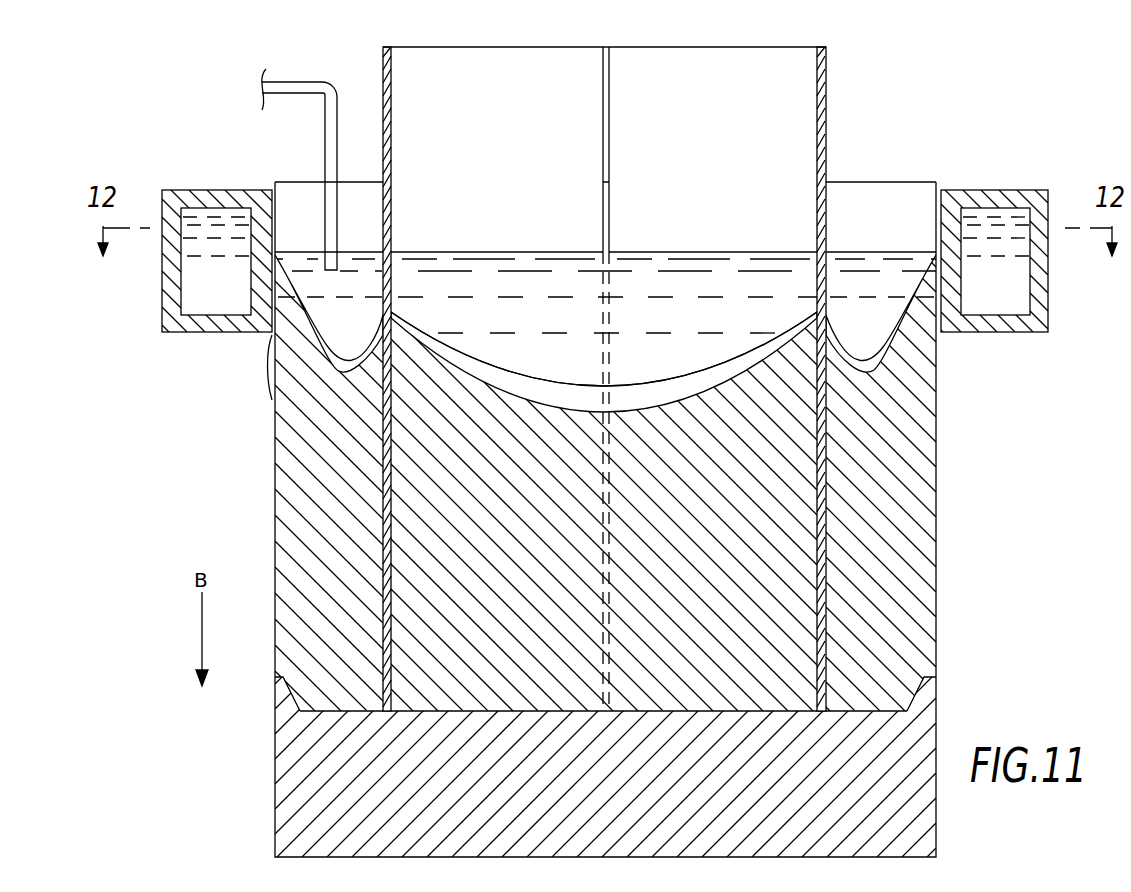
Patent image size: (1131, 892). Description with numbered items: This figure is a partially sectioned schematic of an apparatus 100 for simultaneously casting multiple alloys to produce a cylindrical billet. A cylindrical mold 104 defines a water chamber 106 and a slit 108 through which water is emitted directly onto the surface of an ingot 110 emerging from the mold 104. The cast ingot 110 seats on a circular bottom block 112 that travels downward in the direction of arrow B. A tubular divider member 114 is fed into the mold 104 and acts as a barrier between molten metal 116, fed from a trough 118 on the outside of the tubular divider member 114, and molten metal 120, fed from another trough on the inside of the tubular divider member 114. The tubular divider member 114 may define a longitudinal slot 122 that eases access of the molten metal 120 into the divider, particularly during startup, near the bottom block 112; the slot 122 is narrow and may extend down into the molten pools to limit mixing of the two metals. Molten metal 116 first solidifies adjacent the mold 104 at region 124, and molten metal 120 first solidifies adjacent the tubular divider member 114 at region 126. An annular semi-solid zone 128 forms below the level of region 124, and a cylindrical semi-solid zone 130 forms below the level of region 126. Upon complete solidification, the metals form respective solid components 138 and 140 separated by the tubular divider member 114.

The apparatus 100 is at (920, 76).
The cylindrical mold 104 is at (998, 190).
The water chamber 106 is at (1020, 303).
The slit 108 is at (944, 330).
The ingot 110 is at (944, 470).
The circular bottom block 112 is at (936, 822).
The tubular divider member 114 is at (826, 108).
The molten metal 116 is at (861, 266).
The trough 118 is at (297, 82).
The molten metal 120 is at (722, 268).
The longitudinal slot 122 is at (609, 44).
The first solidification region 124 is at (273, 268).
The first solidification region 126 is at (397, 332).
The annular semi-solid zone 128 is at (322, 337).
The cylindrical semi-solid zone 130 is at (506, 387).
The solid component 138 is at (349, 540).
The solid component 140 is at (498, 555).